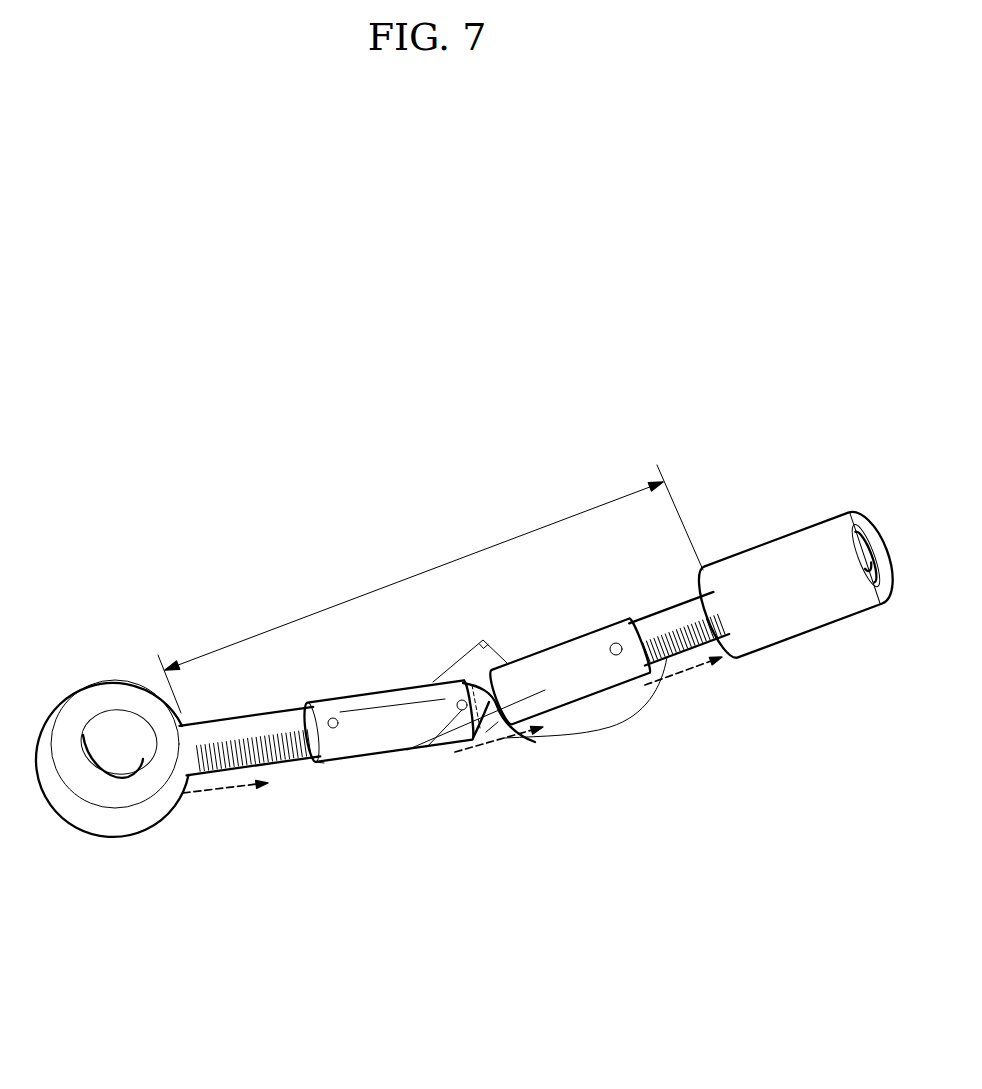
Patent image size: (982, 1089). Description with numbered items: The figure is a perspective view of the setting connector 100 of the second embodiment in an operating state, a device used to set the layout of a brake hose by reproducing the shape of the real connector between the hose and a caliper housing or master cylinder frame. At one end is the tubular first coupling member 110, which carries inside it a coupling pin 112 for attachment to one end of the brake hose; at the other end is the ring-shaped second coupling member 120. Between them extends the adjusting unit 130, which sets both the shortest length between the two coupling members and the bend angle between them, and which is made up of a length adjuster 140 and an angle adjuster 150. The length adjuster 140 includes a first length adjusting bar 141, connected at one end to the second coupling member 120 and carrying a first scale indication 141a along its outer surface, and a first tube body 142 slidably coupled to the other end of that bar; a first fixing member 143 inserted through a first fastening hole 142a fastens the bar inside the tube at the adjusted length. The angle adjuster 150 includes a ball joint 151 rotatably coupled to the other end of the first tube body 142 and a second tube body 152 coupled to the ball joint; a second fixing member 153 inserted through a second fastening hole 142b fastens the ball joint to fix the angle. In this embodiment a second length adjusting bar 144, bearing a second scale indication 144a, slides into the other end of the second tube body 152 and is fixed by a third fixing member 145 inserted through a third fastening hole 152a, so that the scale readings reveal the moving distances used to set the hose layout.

The setting connector 100 is at (707, 456).
The first coupling member 110 is at (853, 613).
The coupling pin 112 is at (877, 545).
The second coupling member 120 is at (88, 822).
The adjusting unit 130 is at (613, 840).
The length adjuster 140 is at (453, 809).
The first length adjusting bar 141 is at (283, 767).
The first scale indication 141a is at (243, 745).
The first tube body 142 is at (332, 753).
The first fastening hole 142a is at (331, 716).
The second fastening hole 142b is at (384, 714).
The first fixing member 143 is at (360, 755).
The second length adjusting bar 144 is at (500, 741).
The second scale indication 144a is at (687, 630).
The third fixing member 145 is at (427, 747).
The angle adjuster 150 is at (658, 770).
The ball joint 151 is at (540, 729).
The second tube body 152 is at (604, 684).
The third fastening hole 152a is at (613, 644).
The second fixing member 153 is at (482, 741).